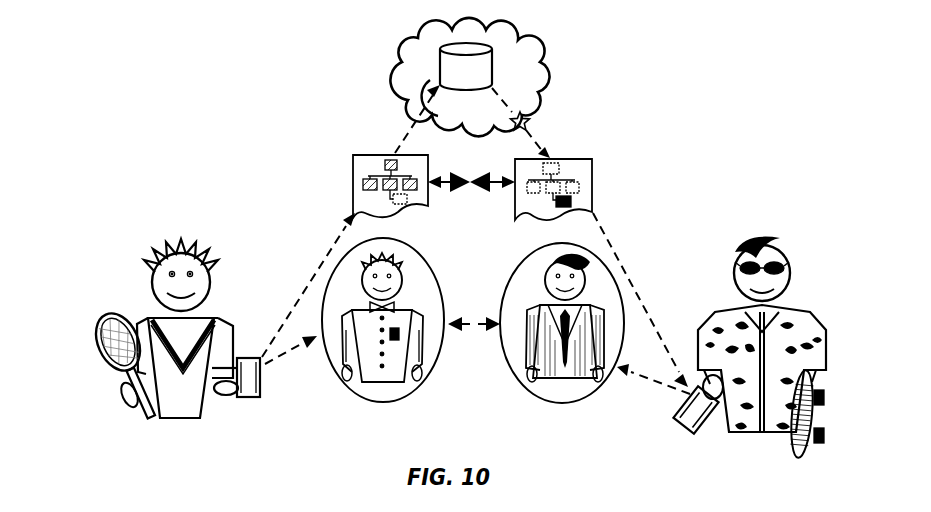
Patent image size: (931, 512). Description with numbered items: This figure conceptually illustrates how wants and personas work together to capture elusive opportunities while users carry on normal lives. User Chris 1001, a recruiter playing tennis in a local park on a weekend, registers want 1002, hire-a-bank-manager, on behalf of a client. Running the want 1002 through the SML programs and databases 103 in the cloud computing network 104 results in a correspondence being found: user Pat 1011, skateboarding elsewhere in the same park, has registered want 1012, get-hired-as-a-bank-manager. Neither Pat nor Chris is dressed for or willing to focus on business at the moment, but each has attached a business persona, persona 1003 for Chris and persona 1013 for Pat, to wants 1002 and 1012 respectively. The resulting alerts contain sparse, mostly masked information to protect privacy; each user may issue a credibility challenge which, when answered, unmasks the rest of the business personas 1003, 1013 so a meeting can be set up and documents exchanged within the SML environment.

The programs and databases 103 is at (480, 82).
The cloud computing network 104 is at (402, 90).
The user Chris 1001 is at (126, 396).
The want 1002 is at (352, 170).
The business persona 1003 is at (346, 390).
The user Pat 1011 is at (730, 430).
The want 1012 is at (592, 185).
The business persona 1013 is at (516, 382).